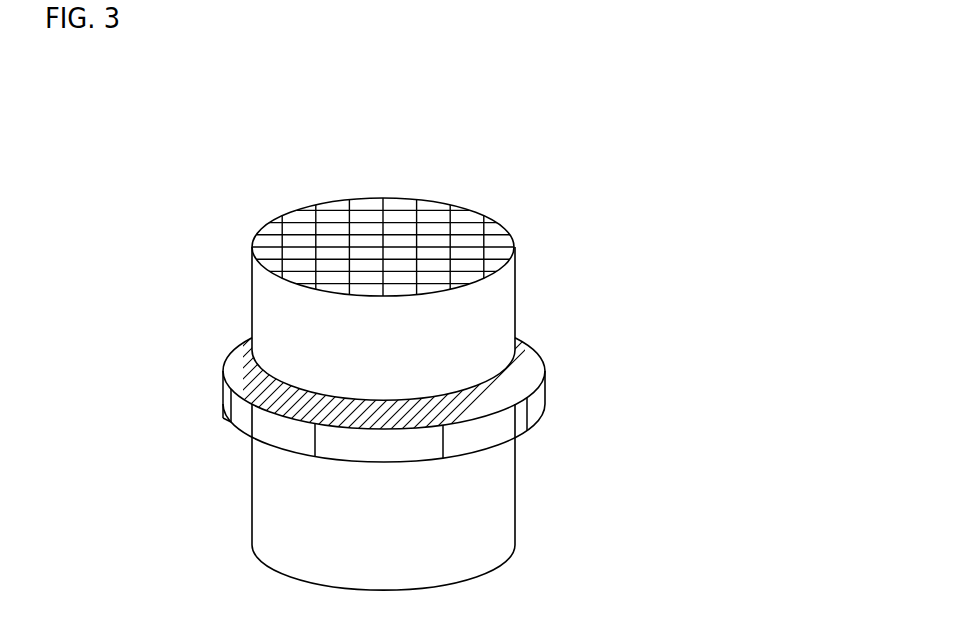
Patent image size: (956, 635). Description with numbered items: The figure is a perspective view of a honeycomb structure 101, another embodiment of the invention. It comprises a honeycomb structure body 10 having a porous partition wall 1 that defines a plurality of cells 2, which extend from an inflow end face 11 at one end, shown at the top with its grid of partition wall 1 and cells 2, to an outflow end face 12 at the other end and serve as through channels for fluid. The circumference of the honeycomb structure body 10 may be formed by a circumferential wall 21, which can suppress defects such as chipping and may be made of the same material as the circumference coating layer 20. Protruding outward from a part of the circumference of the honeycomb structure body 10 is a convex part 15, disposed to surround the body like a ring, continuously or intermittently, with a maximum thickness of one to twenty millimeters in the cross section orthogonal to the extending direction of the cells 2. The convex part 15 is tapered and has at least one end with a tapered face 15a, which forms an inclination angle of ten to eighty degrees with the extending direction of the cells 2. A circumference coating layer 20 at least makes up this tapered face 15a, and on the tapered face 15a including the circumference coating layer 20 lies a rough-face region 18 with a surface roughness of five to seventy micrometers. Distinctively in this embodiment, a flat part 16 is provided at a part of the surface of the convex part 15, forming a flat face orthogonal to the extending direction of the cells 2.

The honeycomb structure 101 is at (645, 91).
The honeycomb structure body 10 is at (467, 217).
The partition wall 1 is at (331, 218).
The cell 2 is at (405, 213).
The inflow end face 11 is at (252, 240).
The circumferential wall 21 is at (260, 315).
The outflow end face 12 is at (268, 560).
The convex part 15 is at (547, 399).
The tapered face 15a is at (240, 370).
The circumference coating layer 20 is at (527, 370).
The flat part 16 is at (264, 436).
The rough-face region 18 is at (235, 397).